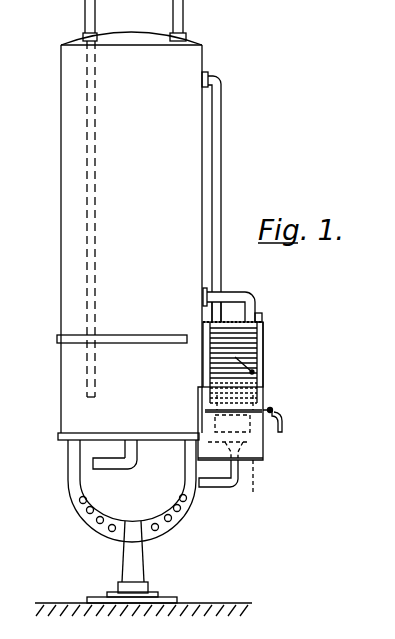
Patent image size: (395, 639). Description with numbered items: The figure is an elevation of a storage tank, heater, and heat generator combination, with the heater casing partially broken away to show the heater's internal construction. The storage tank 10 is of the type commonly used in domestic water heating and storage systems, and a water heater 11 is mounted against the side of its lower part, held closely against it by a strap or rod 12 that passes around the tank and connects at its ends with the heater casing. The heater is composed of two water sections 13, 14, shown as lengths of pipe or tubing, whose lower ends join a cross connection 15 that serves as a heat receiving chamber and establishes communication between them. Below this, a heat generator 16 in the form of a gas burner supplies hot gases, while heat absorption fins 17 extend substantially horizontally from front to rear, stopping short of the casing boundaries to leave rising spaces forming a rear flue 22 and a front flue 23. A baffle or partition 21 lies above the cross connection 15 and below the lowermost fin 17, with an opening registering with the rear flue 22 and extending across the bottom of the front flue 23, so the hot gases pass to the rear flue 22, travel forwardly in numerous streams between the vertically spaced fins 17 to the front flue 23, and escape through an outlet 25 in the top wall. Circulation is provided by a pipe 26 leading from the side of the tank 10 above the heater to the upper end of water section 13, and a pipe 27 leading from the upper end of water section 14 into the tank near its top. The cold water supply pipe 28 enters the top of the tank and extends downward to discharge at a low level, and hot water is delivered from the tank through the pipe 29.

The storage tank 10 is at (183, 157).
The water heater 11 is at (268, 397).
The strap or rod 12 is at (112, 335).
The water section 13 is at (255, 337).
The water section 14 is at (218, 310).
The cross connection 15 is at (266, 441).
The heat generator 16 is at (267, 476).
The heat absorption fins 17 is at (256, 373).
The baffle or partition 21 is at (270, 406).
The rear flue 22 is at (208, 332).
The front flue 23 is at (260, 356).
The outlet 25 is at (262, 317).
The pipe 26 is at (238, 295).
The pipe 27 is at (218, 192).
The cold water supply pipe 28 is at (85, 22).
The hot water delivery pipe 29 is at (184, 26).